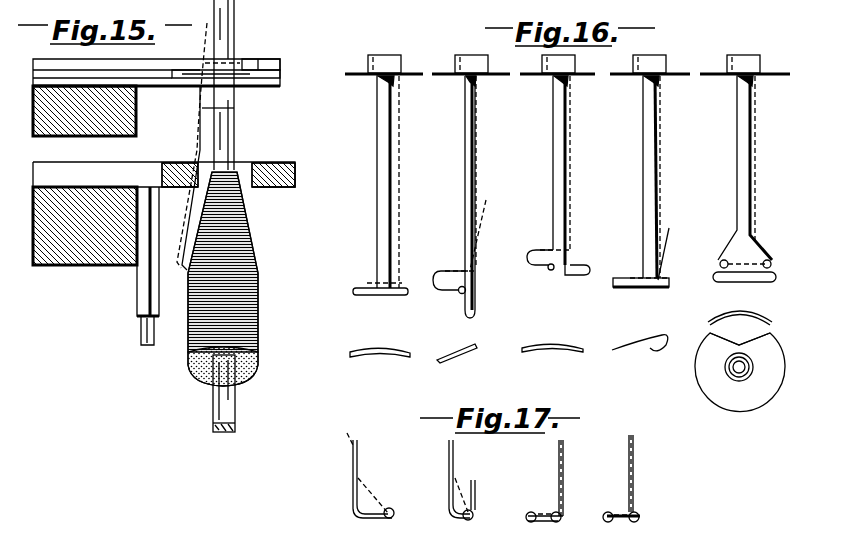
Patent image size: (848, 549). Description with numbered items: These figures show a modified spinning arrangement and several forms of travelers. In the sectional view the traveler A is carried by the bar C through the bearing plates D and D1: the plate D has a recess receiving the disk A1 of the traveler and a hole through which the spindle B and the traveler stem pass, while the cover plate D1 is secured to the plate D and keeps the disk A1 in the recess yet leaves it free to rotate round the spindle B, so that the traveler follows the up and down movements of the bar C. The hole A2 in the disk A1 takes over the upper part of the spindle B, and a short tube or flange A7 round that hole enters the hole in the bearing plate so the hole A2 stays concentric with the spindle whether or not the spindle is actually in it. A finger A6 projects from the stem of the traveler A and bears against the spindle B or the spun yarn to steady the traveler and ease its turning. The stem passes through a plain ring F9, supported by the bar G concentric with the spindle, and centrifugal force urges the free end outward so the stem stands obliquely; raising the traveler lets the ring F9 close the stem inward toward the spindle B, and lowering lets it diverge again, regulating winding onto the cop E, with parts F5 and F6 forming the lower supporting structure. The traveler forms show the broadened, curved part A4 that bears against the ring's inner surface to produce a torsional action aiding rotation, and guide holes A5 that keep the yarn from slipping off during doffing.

In FIG. 15, the traveler A is at (198, 142).
In FIG. 16, the traveler A is at (391, 165).
In FIG. 17, the traveler A is at (359, 473).
In FIG. 16, the disk A1 is at (403, 77).
In FIG. 16, the hole A2 is at (739, 367).
In FIG. 16, the broadened part A4 is at (392, 295).
In FIG. 17, the broadened part A4 is at (371, 519).
In FIG. 16, the guide holes A5 is at (720, 258).
In FIG. 15, the finger A6 is at (222, 108).
In FIG. 15, the tube or flange A7 is at (246, 61).
In FIG. 16, the tube or flange A7 is at (384, 55).
In FIG. 15, the spinning spindle B is at (235, 33).
In FIG. 15, the bar C is at (40, 110).
In FIG. 15, the bearing plate D is at (150, 88).
In FIG. 15, the cover plate D1 is at (170, 66).
In FIG. 15, the bobbin, spool or cop E is at (260, 325).
In FIG. 15, the lower pin F5 is at (150, 330).
In FIG. 15, the rod F6 is at (155, 288).
In FIG. 15, the plain ring F9 is at (272, 166).
In FIG. 15, the bar G is at (42, 210).